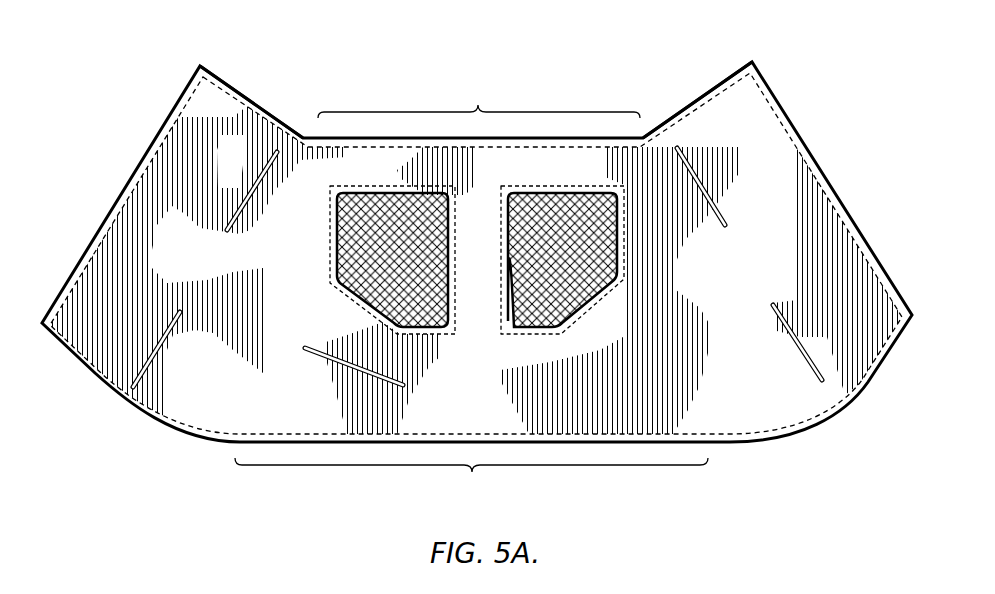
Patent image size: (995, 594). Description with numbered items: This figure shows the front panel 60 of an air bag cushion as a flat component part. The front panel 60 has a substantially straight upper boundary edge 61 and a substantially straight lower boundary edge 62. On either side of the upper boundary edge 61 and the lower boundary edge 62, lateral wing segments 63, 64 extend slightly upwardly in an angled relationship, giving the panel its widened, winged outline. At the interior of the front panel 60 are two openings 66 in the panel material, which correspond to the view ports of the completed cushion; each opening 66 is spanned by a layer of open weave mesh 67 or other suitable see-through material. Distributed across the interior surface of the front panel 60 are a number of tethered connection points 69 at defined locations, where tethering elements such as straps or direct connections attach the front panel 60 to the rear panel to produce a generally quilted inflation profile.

The front panel 60 is at (568, 86).
The upper boundary edge 61 is at (479, 96).
The lower boundary edge 62 is at (471, 480).
The lateral wing segment 63 is at (262, 122).
The lateral wing segment 64 is at (750, 107).
The opening 66 is at (324, 302).
The open weave mesh 67 is at (372, 215).
The tethered connection point 69 is at (235, 213).